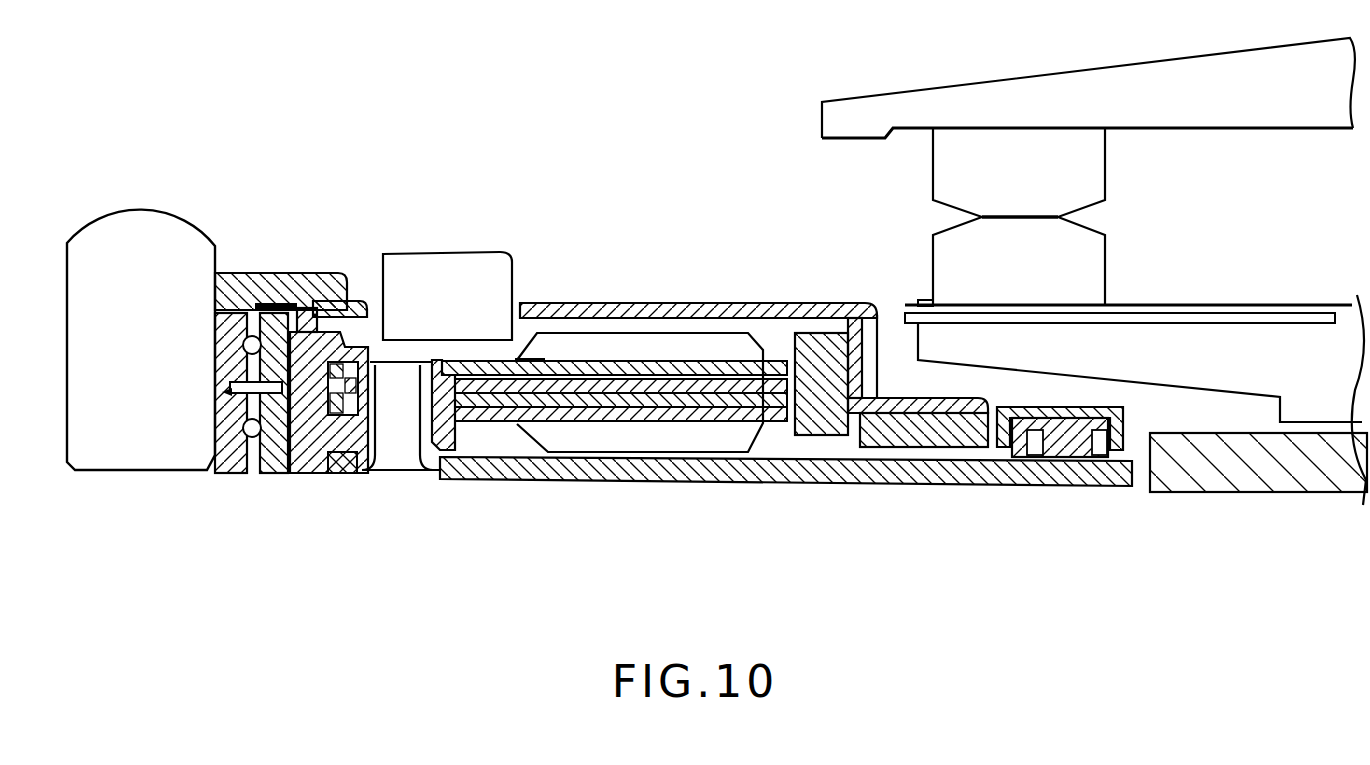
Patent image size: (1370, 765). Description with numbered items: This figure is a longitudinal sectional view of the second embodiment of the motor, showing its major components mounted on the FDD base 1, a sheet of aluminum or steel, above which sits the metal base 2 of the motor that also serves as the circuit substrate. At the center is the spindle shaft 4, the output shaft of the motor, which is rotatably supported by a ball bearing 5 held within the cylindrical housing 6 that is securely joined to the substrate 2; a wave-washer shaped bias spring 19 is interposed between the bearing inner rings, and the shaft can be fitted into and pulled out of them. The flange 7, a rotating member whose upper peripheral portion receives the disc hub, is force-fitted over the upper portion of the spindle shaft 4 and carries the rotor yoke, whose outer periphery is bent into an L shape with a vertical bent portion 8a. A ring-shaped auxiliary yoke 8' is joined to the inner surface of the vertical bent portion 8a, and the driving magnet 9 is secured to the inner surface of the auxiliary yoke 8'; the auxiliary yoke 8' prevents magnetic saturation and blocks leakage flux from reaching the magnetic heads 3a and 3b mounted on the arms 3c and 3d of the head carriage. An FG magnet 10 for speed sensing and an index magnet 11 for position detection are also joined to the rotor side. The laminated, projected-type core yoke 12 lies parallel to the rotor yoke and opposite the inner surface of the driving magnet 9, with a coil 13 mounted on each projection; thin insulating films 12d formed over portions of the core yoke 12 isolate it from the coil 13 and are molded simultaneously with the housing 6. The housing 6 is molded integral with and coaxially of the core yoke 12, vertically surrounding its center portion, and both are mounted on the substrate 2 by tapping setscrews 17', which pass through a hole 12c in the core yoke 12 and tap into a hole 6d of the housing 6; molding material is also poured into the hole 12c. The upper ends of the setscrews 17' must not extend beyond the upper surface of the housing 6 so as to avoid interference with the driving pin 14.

The FDD base 1 is at (1265, 492).
The metal base 2 is at (849, 468).
The magnetic head 3a is at (1105, 182).
The magnetic head 3b is at (1095, 268).
The arm 3c is at (1265, 120).
The arm 3d is at (1222, 330).
The spindle shaft 4 is at (172, 235).
The ball bearing 5 is at (242, 300).
The cylindrical housing 6 is at (312, 310).
The hole 6d is at (418, 372).
The flange 7 is at (268, 285).
The auxiliary yoke 8' is at (708, 330).
The vertical bent portion 8a is at (877, 378).
The driving magnet 9 is at (808, 428).
The FG magnet 10 is at (930, 443).
The index magnet 11 is at (978, 443).
The core yoke 12 is at (614, 300).
The hole 12c is at (530, 358).
The thin insulating film 12d is at (657, 417).
The coil 13 is at (753, 350).
The driving pin 14 is at (438, 262).
The setscrew 17' is at (401, 447).
The bias spring 19 is at (222, 392).